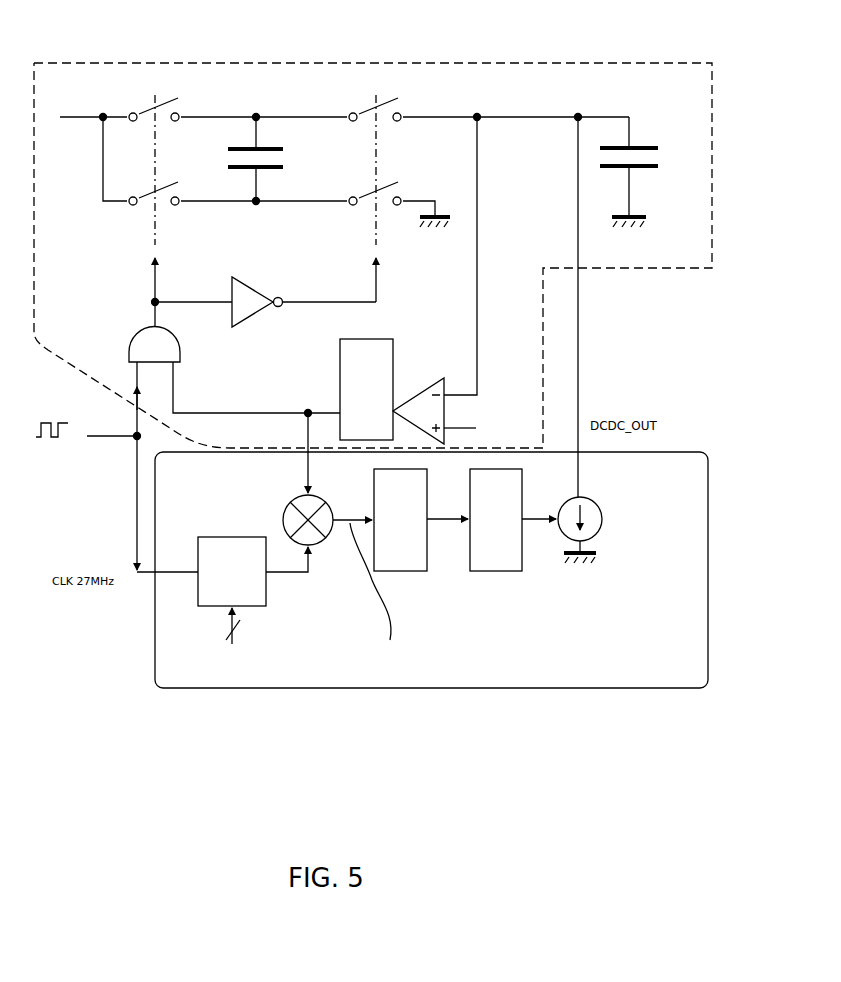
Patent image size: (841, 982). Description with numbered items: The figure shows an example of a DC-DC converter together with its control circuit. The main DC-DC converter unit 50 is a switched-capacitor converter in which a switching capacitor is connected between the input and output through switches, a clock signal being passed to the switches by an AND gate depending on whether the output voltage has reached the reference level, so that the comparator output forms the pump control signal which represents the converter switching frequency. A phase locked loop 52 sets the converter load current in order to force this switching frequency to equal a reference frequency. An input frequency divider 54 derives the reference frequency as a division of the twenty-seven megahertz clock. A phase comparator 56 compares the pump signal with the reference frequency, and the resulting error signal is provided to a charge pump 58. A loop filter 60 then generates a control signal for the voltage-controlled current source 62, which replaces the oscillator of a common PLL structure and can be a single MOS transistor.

The main DC-DC converter unit 50 is at (358, 63).
The phase locked loop 52 is at (708, 547).
The input frequency divider 54 is at (250, 606).
The phase comparator 56 is at (283, 520).
The charge pump 58 is at (427, 571).
The loop filter 60 is at (512, 571).
The voltage-controlled current source 62 is at (603, 516).